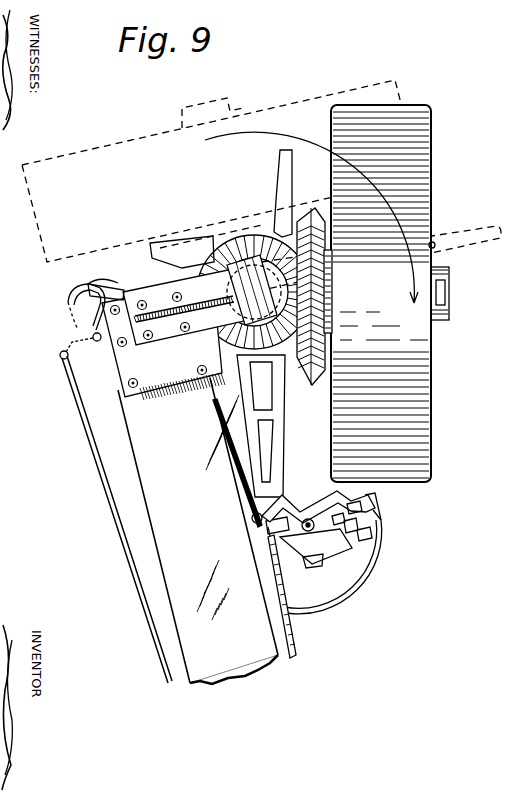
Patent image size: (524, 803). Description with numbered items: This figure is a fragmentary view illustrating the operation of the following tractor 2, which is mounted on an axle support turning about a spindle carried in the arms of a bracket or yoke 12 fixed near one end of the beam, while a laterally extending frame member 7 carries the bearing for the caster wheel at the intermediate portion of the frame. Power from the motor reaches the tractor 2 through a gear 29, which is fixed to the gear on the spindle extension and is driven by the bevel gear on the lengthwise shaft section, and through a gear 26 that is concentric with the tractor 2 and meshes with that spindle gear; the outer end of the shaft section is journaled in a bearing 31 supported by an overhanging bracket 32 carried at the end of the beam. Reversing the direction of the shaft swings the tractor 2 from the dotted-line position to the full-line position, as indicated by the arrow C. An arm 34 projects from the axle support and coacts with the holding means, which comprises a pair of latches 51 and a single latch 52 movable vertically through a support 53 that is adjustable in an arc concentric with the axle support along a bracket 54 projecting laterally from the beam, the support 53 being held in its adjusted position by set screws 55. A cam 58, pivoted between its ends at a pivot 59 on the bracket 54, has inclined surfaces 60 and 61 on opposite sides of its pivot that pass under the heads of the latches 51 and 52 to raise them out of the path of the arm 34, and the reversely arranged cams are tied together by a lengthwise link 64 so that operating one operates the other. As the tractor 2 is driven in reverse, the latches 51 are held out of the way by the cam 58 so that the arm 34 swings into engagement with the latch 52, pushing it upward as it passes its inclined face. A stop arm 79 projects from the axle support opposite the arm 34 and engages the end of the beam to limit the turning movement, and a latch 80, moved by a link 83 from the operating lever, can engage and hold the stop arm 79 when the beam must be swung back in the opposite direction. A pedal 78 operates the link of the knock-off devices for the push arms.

The tractor 2 is at (382, 268).
The laterally extending frame member 7 is at (222, 682).
The bracket or yoke 12 is at (159, 385).
The gear 26 is at (310, 388).
The gear 29 is at (228, 238).
The bearing 31 is at (166, 327).
The overhanging bracket 32 is at (163, 340).
The arm 34 is at (282, 445).
The latches 51 is at (372, 499).
The latch 52 is at (286, 536).
The support 53 is at (378, 512).
The bracket 54 is at (330, 552).
The set screws 55 is at (320, 567).
The cam 58 is at (297, 507).
The pivot 59 is at (353, 550).
The inclined surface 60 is at (378, 528).
The inclined surface 61 is at (254, 514).
The link 64 is at (292, 645).
The pedal 78 is at (279, 166).
The stop arm 79 is at (118, 288).
The latch 80 is at (64, 298).
The link 83 is at (107, 490).
The direction arrow C is at (392, 215).